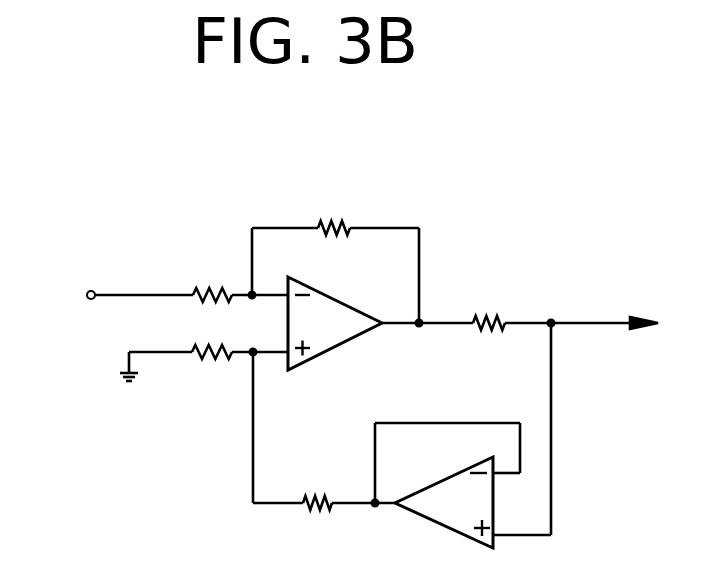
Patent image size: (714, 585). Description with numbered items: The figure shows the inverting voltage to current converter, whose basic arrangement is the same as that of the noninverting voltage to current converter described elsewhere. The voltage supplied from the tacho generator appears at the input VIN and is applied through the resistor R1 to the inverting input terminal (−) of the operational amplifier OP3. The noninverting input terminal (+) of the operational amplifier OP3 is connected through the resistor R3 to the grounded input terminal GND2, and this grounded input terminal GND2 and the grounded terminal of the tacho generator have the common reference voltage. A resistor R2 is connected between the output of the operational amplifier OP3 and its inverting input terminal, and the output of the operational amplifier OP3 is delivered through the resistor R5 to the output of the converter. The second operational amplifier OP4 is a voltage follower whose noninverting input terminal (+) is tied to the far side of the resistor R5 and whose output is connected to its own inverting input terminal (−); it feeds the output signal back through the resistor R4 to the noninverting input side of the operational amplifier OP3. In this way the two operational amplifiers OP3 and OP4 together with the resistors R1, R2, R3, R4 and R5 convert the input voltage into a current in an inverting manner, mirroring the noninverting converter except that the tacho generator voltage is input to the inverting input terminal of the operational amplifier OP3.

The input voltage terminal VIN is at (114, 289).
The resistor R1 is at (239, 263).
The resistor R2 is at (334, 255).
The resistor R3 is at (208, 354).
The resistor R4 is at (322, 448).
The resistor R5 is at (520, 321).
The operational amplifier OP3 is at (335, 323).
The operational amplifier OP4 is at (461, 435).
The grounded input terminal GND2 is at (132, 390).